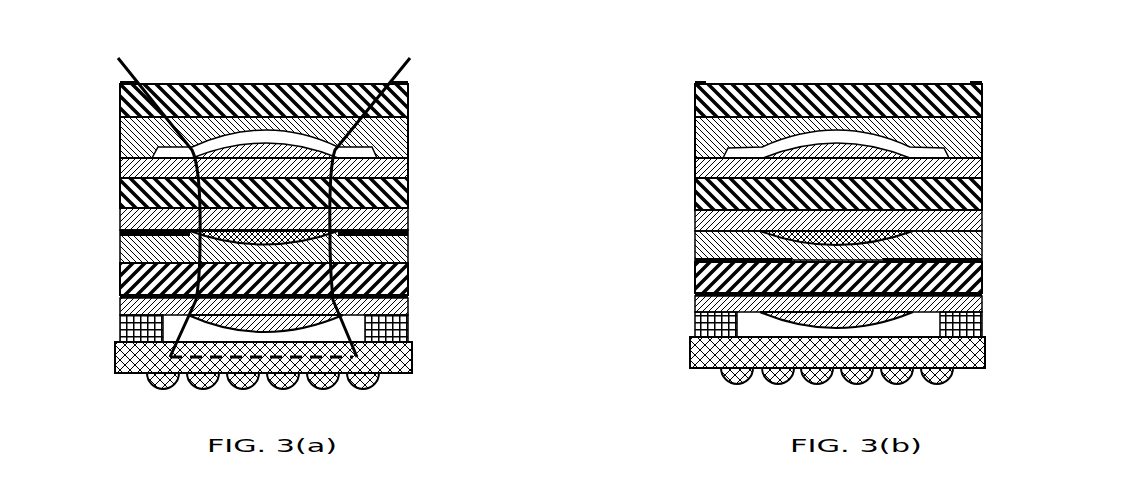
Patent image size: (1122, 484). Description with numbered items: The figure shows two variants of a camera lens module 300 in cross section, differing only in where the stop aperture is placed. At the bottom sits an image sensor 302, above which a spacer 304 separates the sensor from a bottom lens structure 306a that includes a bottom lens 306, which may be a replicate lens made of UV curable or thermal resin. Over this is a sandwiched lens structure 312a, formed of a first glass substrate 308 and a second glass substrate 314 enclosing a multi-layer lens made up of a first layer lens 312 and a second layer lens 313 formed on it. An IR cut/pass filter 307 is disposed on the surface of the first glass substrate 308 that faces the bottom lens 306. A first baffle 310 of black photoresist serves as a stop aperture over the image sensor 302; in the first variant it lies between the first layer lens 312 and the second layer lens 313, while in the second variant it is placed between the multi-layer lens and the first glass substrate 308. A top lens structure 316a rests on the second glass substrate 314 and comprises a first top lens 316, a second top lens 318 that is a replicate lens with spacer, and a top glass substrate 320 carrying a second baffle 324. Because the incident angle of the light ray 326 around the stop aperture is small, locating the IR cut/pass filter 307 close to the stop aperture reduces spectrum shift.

In FIG. 3A, the camera lens module 300 is at (274, 66).
In FIG. 3B, the camera lens module 300 is at (848, 63).
In FIG. 3A, the image sensor 302 is at (413, 358).
In FIG. 3B, the image sensor 302 is at (688, 357).
In FIG. 3A, the spacer 304 is at (410, 328).
In FIG. 3B, the spacer 304 is at (693, 322).
In FIG. 3A, the bottom lens 306 is at (410, 310).
In FIG. 3B, the bottom lens 306 is at (693, 310).
In FIG. 3A, the bottom lens structure 306a is at (108, 298).
In FIG. 3B, the bottom lens structure 306a is at (993, 297).
In FIG. 3A, the IR cut/pass filter 307 is at (413, 300).
In FIG. 3B, the IR cut/pass filter 307 is at (691, 299).
In FIG. 3A, the first glass substrate 308 is at (410, 278).
In FIG. 3B, the first glass substrate 308 is at (693, 277).
In FIG. 3A, the first baffle 310 is at (412, 233).
In FIG. 3B, the first baffle 310 is at (692, 256).
In FIG. 3A, the first layer lens 312 is at (410, 250).
In FIG. 3B, the first layer lens 312 is at (693, 243).
In FIG. 3A, the sandwiched lens structure 312a is at (108, 180).
In FIG. 3B, the sandwiched lens structure 312a is at (993, 180).
In FIG. 3A, the second layer lens 313 is at (410, 220).
In FIG. 3B, the second layer lens 313 is at (693, 220).
In FIG. 3A, the second glass substrate 314 is at (410, 194).
In FIG. 3B, the second glass substrate 314 is at (693, 194).
In FIG. 3A, the first top lens 316 is at (410, 168).
In FIG. 3B, the first top lens 316 is at (693, 168).
In FIG. 3A, the top lens structure 316a is at (108, 87).
In FIG. 3B, the top lens structure 316a is at (993, 87).
In FIG. 3A, the second top lens 318 is at (410, 138).
In FIG. 3B, the second top lens 318 is at (693, 138).
In FIG. 3A, the top glass substrate 320 is at (410, 100).
In FIG. 3B, the top glass substrate 320 is at (693, 100).
In FIG. 3A, the second baffle 324 is at (410, 82).
In FIG. 3B, the second baffle 324 is at (693, 82).
In FIG. 3A, the light ray 326 is at (142, 69).